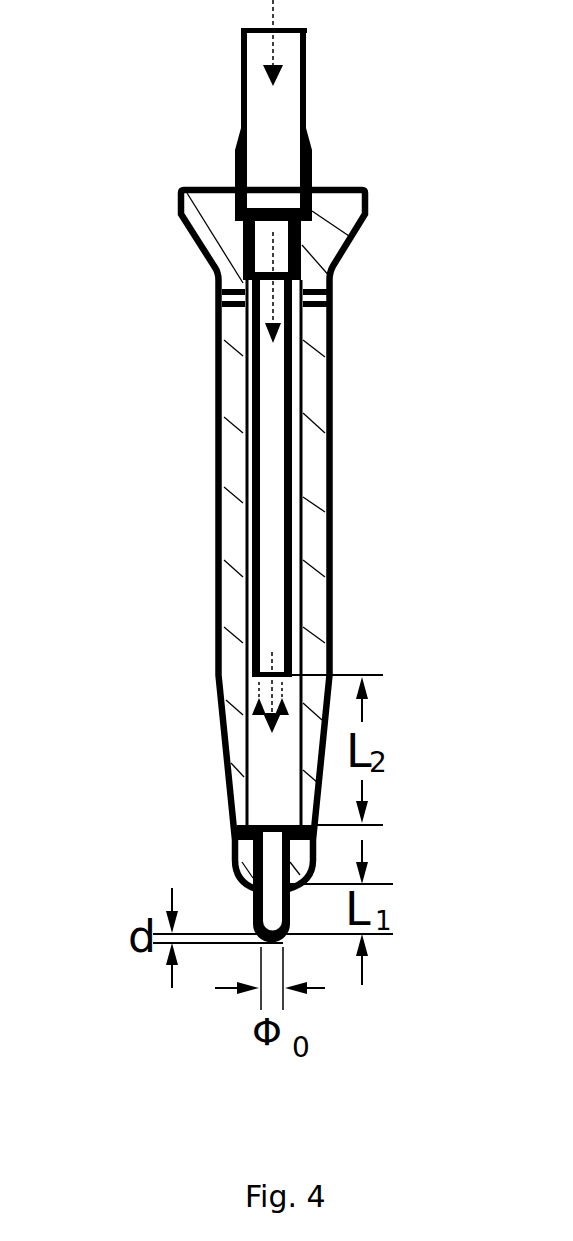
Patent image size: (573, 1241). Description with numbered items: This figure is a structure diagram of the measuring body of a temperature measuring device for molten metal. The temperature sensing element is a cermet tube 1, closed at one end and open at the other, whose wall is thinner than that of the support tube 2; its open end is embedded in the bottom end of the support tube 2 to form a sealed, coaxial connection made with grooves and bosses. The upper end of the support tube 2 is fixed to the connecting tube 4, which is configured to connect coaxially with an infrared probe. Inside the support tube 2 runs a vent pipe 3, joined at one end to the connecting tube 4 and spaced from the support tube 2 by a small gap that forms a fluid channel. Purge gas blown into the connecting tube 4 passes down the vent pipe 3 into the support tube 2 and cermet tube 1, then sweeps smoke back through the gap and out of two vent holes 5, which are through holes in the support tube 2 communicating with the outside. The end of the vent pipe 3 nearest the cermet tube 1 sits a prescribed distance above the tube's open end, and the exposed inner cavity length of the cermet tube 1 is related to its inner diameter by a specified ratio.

The cermet tube 1 is at (212, 875).
The support tube 2 is at (242, 539).
The vent pipe 3 is at (331, 476).
The connecting tube 4 is at (217, 110).
The vent hole 5 is at (213, 298).